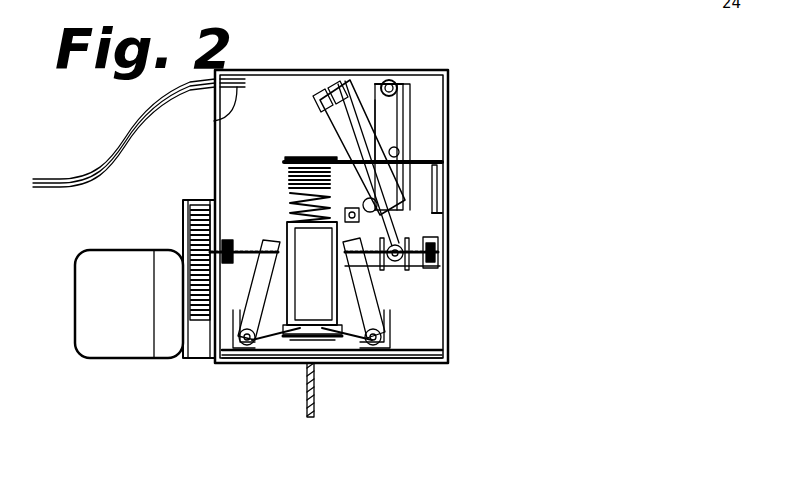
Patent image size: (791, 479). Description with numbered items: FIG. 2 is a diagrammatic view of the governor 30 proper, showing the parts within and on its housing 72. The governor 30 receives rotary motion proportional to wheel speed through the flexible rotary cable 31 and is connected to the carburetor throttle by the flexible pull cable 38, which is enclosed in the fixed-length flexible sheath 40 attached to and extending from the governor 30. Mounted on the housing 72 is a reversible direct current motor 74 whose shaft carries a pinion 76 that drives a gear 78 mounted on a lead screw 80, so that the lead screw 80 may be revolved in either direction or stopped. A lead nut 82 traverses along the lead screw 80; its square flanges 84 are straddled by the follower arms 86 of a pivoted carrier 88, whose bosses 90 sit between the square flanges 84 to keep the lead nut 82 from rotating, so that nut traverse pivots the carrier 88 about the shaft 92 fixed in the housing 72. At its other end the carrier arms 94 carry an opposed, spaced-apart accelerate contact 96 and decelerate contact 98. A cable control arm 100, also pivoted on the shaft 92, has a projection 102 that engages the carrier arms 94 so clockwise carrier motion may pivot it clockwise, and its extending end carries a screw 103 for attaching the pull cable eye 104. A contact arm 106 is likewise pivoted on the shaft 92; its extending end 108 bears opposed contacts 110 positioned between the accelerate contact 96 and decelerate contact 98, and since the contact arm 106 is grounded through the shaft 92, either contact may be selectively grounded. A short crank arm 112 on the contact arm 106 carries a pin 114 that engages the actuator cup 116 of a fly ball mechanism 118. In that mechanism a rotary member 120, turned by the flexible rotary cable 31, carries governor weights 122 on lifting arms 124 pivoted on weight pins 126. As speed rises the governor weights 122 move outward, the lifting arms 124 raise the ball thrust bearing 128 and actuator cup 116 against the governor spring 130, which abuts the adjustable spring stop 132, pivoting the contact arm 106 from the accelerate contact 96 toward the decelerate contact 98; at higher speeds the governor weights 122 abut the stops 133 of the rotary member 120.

The governor 30 is at (455, 270).
The flexible rotary cable 31 is at (316, 396).
The flexible pull cable 38 is at (214, 121).
The flexible sheath 40 is at (100, 149).
The housing 72 is at (448, 358).
The reversible direct current motor 74 is at (120, 364).
The pinion 76 is at (203, 328).
The gear 78 is at (197, 203).
The lead screw 80 is at (245, 248).
The lead nut 82 is at (420, 268).
The square flanges 84 is at (400, 270).
The follower arms 86 is at (440, 250).
The pivoted carrier 88 is at (335, 138).
The bosses 90 is at (410, 255).
The shaft 92 is at (405, 220).
The carrier arms 94 is at (333, 123).
The accelerate contact 96 is at (326, 97).
The decelerate contact 98 is at (352, 80).
The cable control arm 100 is at (372, 138).
The projection 102 is at (398, 152).
The screw 103 is at (408, 108).
The pull cable eye 104 is at (394, 74).
The contact arm 106 is at (400, 135).
The extending end 108 is at (312, 103).
The opposed contacts 110 is at (344, 83).
The short crank arm 112 is at (335, 158).
The pin 114 is at (332, 240).
The actuator cup 116 is at (346, 327).
The fly ball mechanism 118 is at (280, 365).
The rotary member 120 is at (300, 328).
The governor weights 122 is at (273, 237).
The lifting arms 124 is at (343, 315).
The weight pins 126 is at (248, 345).
The ball thrust bearing 128 is at (312, 325).
The governor spring 130 is at (283, 190).
The adjustable spring stop 132 is at (443, 162).
The stops 133 is at (232, 310).